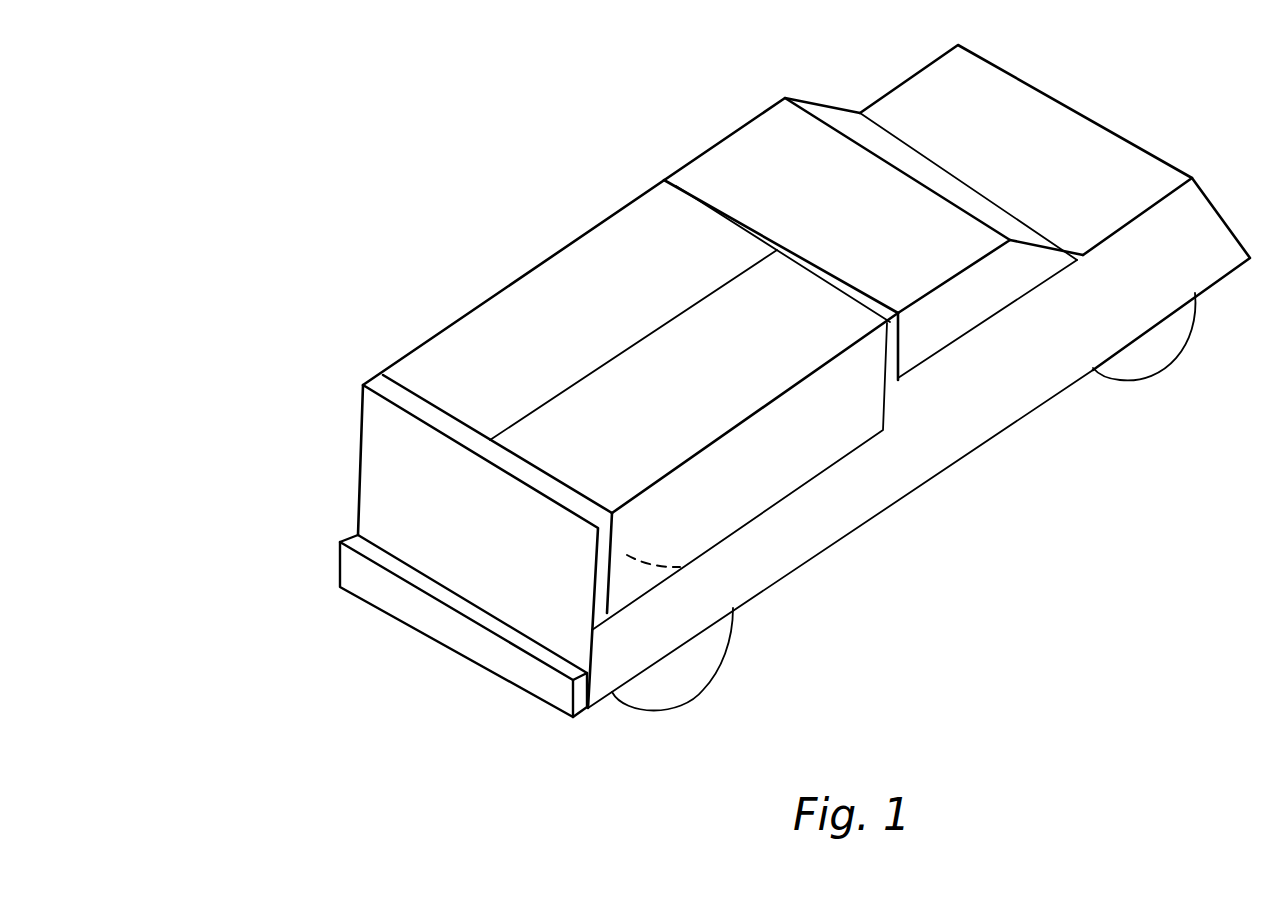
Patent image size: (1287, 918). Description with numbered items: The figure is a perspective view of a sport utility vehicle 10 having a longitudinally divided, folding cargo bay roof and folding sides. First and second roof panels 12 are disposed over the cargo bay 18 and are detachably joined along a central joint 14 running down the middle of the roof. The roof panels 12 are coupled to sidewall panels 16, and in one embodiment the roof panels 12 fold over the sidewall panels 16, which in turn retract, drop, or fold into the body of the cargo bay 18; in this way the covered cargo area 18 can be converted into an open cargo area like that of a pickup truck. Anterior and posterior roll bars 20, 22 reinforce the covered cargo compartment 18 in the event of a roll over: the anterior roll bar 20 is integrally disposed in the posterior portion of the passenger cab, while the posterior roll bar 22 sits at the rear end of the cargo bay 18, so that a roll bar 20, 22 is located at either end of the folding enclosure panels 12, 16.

The sport utility vehicle 10 is at (318, 293).
The roof panels 12 is at (535, 330).
The central joint 14 is at (638, 347).
The sidewall panels 16 is at (795, 448).
The cargo bay 18 is at (680, 560).
The anterior roll bar 20 is at (893, 353).
The posterior roll bar 22 is at (597, 586).